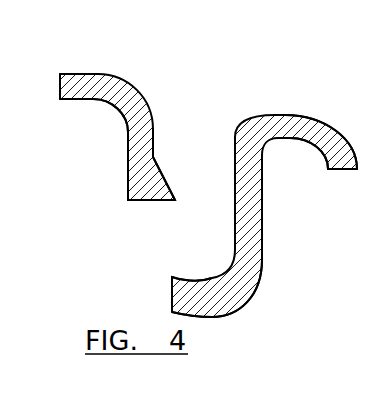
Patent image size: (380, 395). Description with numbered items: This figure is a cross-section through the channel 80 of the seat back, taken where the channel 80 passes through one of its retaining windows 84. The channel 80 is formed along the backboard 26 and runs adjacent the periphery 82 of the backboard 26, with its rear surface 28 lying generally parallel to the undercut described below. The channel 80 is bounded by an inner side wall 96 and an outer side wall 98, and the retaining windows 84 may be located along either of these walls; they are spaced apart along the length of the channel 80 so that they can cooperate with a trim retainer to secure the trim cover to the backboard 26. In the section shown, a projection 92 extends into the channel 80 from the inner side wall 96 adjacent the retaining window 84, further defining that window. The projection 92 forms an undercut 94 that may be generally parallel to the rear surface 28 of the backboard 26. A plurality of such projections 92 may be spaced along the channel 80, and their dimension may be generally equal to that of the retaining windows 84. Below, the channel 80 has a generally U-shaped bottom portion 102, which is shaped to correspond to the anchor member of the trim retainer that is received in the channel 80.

The backboard 26 is at (263, 69).
The rear surface 28 is at (78, 84).
The channel 80 is at (205, 148).
The periphery 82 is at (342, 140).
The retaining window 84 is at (186, 238).
The projection 92 is at (150, 182).
The undercut 94 is at (153, 204).
The inner side wall 96 is at (128, 140).
The outer side wall 98 is at (262, 208).
The U-shaped bottom portion 102 is at (217, 297).